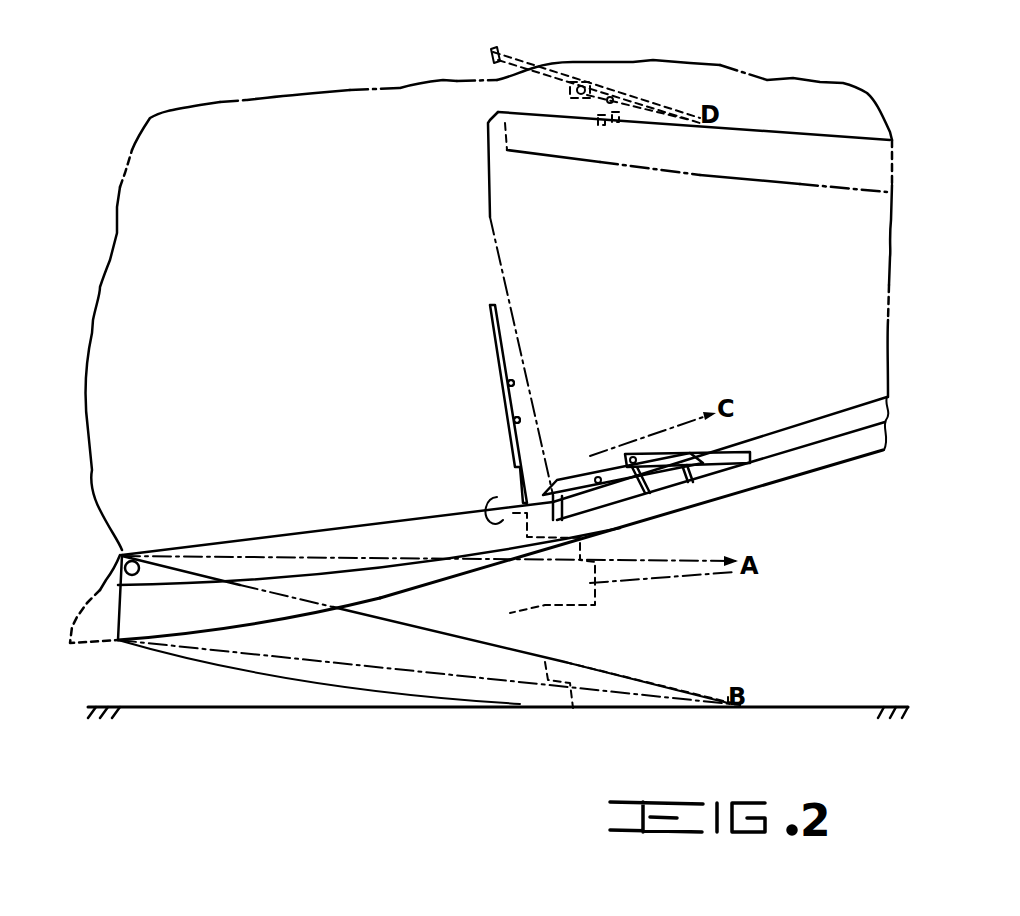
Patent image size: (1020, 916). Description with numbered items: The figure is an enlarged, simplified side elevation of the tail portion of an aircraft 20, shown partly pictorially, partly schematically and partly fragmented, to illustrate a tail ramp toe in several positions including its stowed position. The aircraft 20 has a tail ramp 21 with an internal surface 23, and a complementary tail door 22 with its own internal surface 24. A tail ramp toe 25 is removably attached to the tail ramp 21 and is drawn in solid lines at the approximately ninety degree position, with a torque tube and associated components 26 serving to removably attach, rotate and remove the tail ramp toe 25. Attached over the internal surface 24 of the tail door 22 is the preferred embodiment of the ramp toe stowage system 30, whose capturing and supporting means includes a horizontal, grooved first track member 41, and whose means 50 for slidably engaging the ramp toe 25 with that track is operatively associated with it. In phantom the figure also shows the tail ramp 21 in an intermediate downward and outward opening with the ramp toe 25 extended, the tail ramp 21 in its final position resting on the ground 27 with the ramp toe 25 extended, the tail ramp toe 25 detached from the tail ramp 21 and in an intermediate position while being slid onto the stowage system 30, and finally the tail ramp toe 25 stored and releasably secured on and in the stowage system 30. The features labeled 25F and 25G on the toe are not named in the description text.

The aircraft 20 is at (210, 165).
The tail ramp 21 is at (397, 585).
The complementary tail door 22 is at (773, 483).
The internal surface of tail ramp 23 is at (270, 577).
The internal surface of tail door 24 is at (752, 132).
The tail ramp toe 25 is at (512, 56).
The mast hole 25F is at (513, 381).
The mast hole 25G is at (514, 421).
The torque tube and associated components 26 is at (500, 546).
The ground 27 is at (822, 708).
The ramp toe stowage system 30 is at (650, 103).
The first track member 41 is at (676, 453).
The means for slidably engaging 50 is at (552, 385).